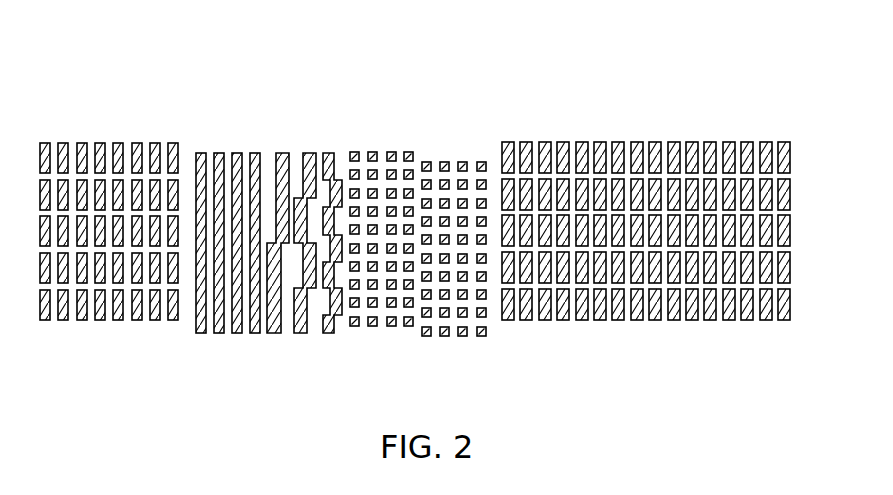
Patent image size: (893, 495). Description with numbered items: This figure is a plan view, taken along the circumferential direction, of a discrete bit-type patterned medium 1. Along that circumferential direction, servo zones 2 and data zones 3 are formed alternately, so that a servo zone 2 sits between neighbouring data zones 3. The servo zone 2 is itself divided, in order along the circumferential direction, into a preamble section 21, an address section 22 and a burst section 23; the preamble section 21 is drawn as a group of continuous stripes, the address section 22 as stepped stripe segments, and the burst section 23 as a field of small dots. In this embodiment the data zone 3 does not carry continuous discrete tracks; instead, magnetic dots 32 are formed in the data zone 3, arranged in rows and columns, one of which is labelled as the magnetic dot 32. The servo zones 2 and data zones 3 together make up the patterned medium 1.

The patterned medium 1 is at (175, 96).
The servo zone 2 is at (485, 120).
The data zone 3 is at (785, 120).
The preamble section 21 is at (259, 344).
The address section 22 is at (342, 344).
The burst section 23 is at (486, 344).
The magnetic dot 32 is at (782, 141).